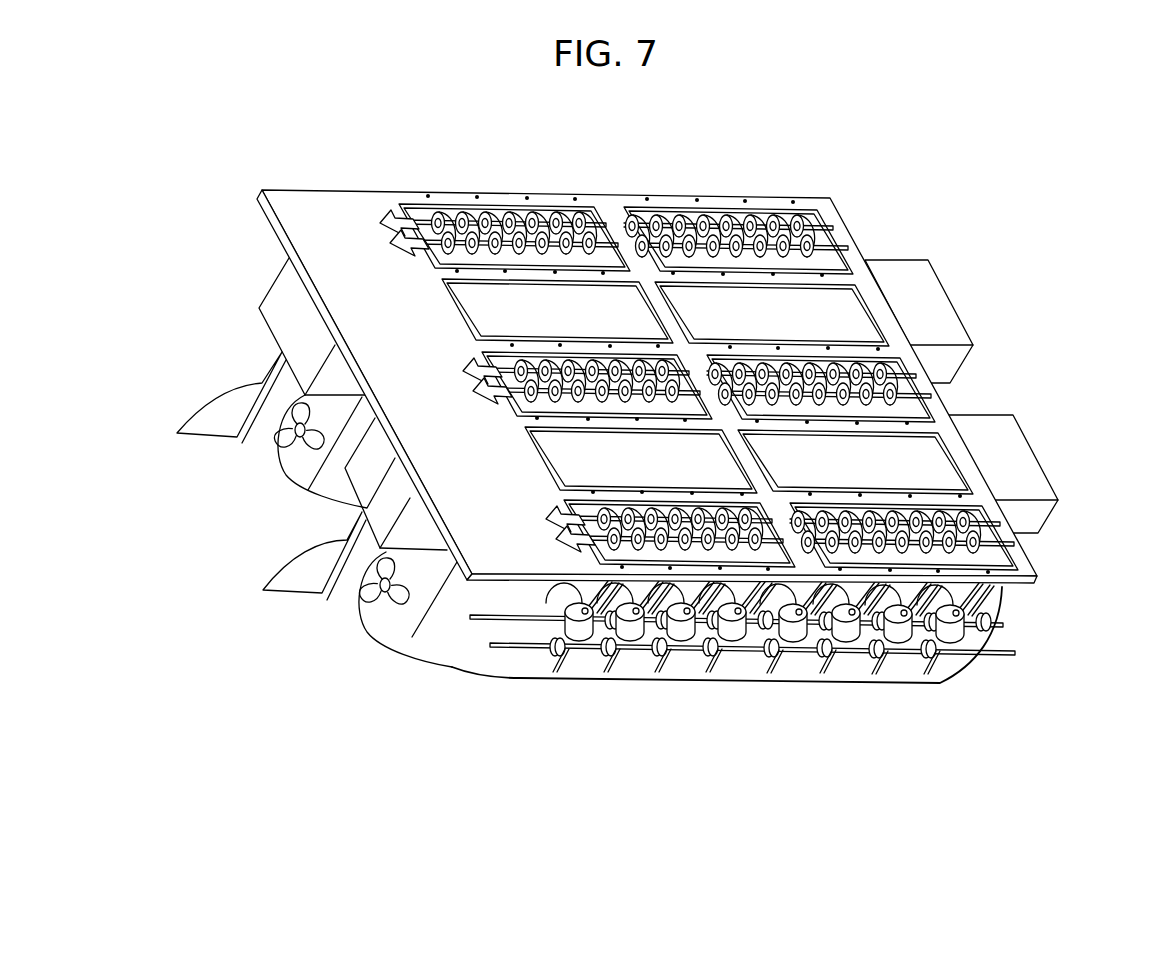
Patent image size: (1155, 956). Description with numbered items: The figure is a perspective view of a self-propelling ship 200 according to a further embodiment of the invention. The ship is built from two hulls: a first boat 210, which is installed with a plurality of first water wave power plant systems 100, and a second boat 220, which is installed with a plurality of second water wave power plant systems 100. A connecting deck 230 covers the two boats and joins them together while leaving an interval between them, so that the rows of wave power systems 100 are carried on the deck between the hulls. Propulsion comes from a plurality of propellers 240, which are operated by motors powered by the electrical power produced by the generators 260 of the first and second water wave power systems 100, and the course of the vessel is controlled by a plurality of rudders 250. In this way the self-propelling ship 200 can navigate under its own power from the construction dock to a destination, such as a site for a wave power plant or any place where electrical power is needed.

The water wave power plant system 100 is at (677, 406).
The self-propelling ship 200 is at (748, 183).
The first boat 210 is at (955, 287).
The second boat 220 is at (1048, 443).
The connecting deck 230 is at (303, 210).
The propeller 240 is at (288, 437).
The rudder 250 is at (203, 412).
The generator 260 is at (426, 235).